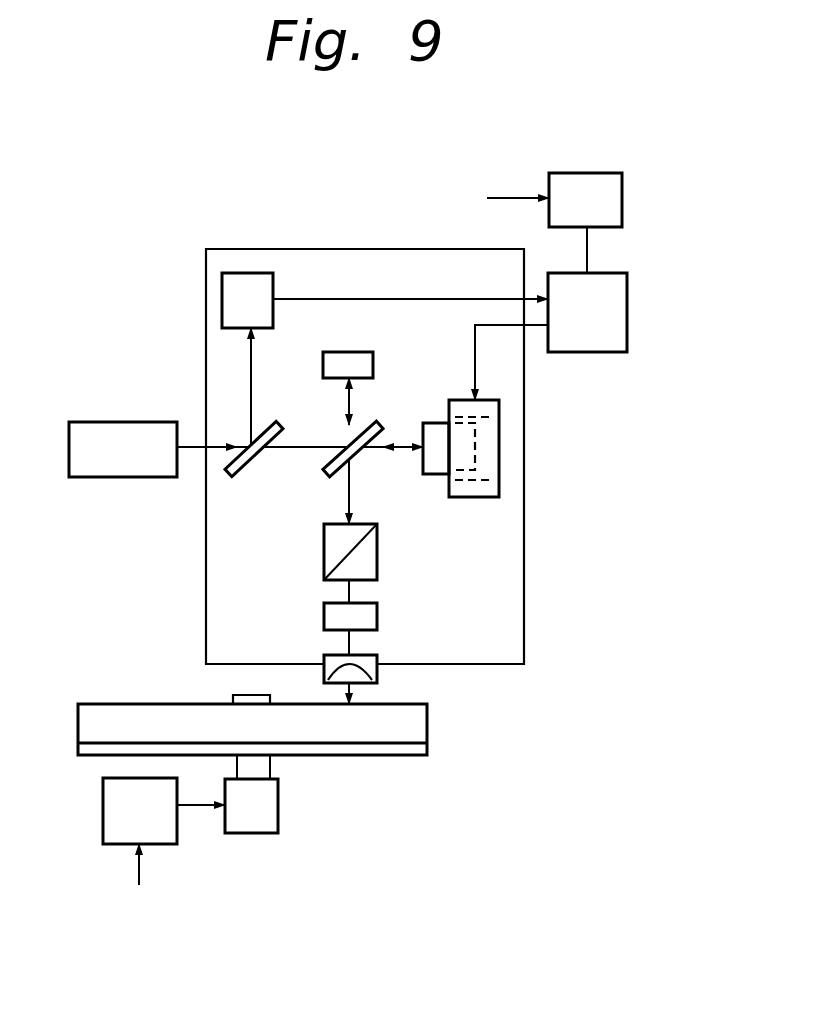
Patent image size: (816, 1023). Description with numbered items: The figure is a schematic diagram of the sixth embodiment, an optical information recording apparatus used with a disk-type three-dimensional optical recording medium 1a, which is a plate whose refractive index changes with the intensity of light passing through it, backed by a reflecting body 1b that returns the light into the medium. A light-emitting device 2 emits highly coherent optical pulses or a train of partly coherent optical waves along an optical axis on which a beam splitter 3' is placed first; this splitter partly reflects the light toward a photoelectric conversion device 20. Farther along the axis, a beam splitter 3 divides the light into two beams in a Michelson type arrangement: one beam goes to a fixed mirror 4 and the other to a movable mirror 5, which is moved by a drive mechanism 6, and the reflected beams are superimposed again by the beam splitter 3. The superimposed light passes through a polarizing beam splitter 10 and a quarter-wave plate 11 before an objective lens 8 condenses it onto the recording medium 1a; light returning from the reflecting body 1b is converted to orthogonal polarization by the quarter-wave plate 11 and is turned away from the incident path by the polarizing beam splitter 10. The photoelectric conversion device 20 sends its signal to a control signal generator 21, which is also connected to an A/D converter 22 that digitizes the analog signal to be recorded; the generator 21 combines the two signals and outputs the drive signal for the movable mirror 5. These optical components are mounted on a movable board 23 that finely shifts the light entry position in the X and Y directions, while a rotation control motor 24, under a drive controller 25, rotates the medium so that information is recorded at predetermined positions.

The three-dimensional optical recording medium 1a is at (428, 722).
The reflecting body 1b is at (404, 755).
The light-emitting device 2 is at (129, 422).
The beam splitter 3 is at (366, 425).
The beam splitter 3' is at (256, 425).
The fixed mirror 4 is at (355, 352).
The movable mirror 5 is at (424, 462).
The drive mechanism 6 is at (470, 498).
The objective lens 8 is at (372, 656).
The polarizing beam splitter 10 is at (324, 553).
The quarter-wave plate 11 is at (324, 618).
The photoelectric conversion device 20 is at (273, 285).
The control signal generator 21 is at (575, 353).
The A/D converter 22 is at (568, 173).
The movable board 23 is at (525, 600).
The rotation control motor 24 is at (252, 834).
The drive controller 25 is at (103, 805).